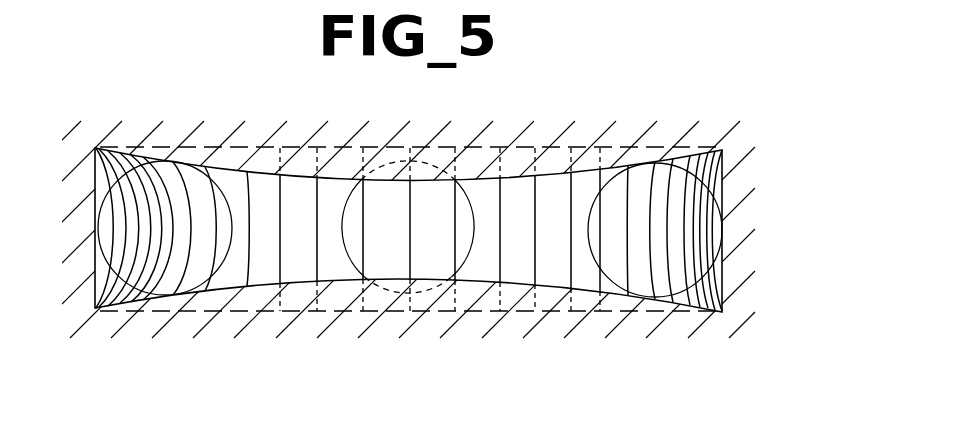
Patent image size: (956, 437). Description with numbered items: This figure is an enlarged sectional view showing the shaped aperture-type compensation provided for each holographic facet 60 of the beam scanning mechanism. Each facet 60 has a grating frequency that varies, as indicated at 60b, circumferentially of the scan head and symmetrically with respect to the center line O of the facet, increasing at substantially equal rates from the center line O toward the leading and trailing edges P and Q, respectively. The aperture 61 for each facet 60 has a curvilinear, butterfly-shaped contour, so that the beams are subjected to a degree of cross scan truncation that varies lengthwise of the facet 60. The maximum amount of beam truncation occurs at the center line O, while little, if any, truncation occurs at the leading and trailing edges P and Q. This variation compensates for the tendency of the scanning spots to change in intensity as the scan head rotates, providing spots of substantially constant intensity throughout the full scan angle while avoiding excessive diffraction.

The holographic facet 60 is at (545, 107).
The grating frequency variation 60b is at (207, 215).
The aperture 61 is at (303, 188).
The trailing edge Q is at (165, 227).
The center line O is at (408, 215).
The leading edge P is at (655, 227).